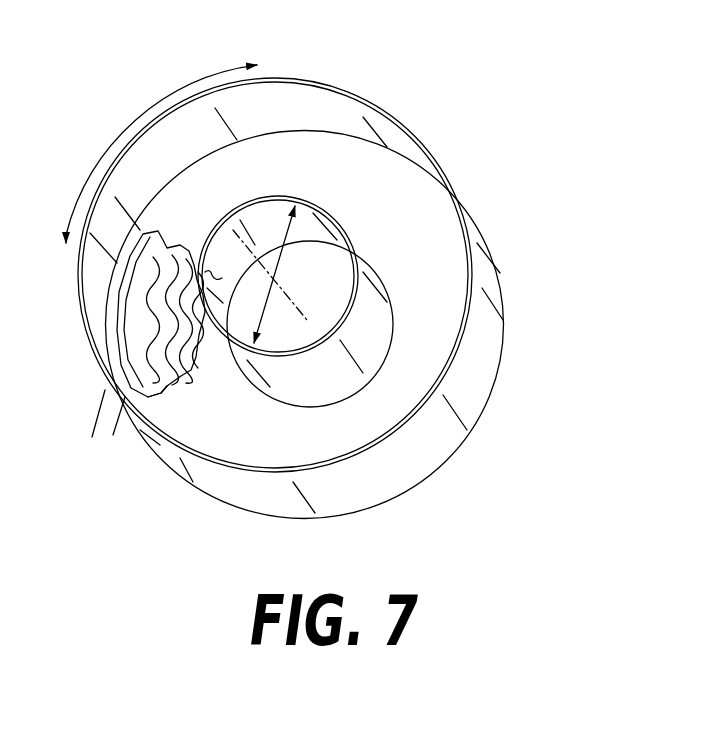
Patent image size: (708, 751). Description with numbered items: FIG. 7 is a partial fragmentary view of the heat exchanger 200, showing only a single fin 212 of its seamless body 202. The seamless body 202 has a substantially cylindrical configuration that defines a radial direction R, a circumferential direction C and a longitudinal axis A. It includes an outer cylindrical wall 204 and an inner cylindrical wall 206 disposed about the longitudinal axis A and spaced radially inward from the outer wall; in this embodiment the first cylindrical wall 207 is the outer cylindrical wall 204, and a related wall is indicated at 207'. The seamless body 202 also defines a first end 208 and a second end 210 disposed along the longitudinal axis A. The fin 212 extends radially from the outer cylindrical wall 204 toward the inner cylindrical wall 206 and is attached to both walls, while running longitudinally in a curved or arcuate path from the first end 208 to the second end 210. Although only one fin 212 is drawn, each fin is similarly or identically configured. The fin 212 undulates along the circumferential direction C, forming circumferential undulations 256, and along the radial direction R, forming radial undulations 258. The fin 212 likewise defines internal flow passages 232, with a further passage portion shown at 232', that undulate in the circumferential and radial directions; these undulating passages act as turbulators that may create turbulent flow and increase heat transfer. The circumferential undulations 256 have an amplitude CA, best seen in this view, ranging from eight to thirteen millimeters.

The heat exchanger 200 is at (433, 96).
The seamless body 202 is at (317, 268).
The outer cylindrical wall 204 is at (487, 332).
The inner cylindrical wall 206 is at (354, 232).
The first cylindrical wall 207 is at (278, 276).
The eccentric shaft 207' is at (297, 313).
The first end 208 is at (325, 80).
The second end 210 is at (370, 140).
The fin 212 is at (144, 232).
The internal flow passages 232 is at (197, 408).
The foil layer 232' is at (217, 332).
The circumferential undulations 256 is at (100, 296).
The radial undulations 258 is at (150, 440).
The longitudinal axis A is at (258, 246).
The radial direction R is at (283, 262).
The circumferential direction C is at (130, 131).
The amplitude CA is at (98, 388).